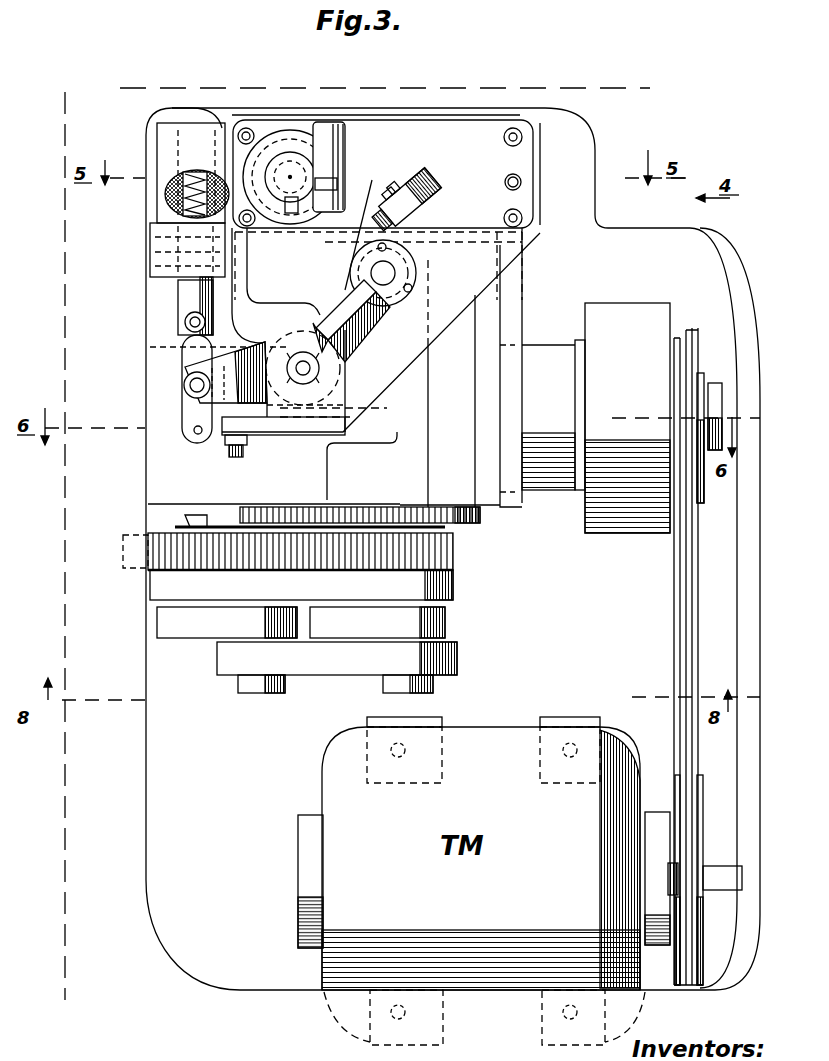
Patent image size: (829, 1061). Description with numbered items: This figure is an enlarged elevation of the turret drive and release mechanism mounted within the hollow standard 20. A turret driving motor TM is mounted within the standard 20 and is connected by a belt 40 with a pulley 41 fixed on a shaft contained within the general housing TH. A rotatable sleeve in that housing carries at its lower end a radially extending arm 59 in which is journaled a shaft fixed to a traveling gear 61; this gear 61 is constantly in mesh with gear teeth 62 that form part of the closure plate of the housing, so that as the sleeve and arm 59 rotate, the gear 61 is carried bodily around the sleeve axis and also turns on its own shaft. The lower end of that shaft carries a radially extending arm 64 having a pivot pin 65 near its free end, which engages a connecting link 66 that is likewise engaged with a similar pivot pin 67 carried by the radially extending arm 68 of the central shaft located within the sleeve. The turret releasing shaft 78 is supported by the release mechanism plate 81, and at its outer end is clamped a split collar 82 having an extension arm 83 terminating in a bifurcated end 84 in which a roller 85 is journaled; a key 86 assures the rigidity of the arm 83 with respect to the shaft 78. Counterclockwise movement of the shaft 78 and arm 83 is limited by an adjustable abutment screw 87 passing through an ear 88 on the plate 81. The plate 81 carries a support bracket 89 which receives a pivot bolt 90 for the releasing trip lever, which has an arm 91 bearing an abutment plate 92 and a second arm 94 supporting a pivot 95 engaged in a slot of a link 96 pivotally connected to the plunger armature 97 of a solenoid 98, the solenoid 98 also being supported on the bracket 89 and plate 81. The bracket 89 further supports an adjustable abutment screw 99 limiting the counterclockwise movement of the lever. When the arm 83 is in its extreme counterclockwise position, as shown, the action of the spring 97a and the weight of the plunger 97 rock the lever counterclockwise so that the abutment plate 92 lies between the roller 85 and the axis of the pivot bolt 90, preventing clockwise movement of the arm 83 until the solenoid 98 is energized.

The hollow standard 20 is at (135, 815).
The belt 40 is at (683, 570).
The pulley 41 is at (693, 332).
The radially extending arm 59 is at (455, 583).
The traveling gear 61 is at (175, 552).
The gear teeth 62 is at (453, 552).
The radially extending arm 64 is at (200, 630).
The pivot pin 65 is at (259, 696).
The connecting link 66 is at (457, 653).
The pivot pin 67 is at (430, 697).
The radially extending arm 68 is at (447, 622).
The turret releasing shaft 78 is at (303, 178).
The release mechanism plate 81 is at (383, 174).
The split collar 82 is at (282, 148).
The extension arm 83 is at (372, 223).
The bifurcated end 84 is at (410, 262).
The roller 85 is at (428, 274).
The key 86 is at (289, 210).
The adjustable abutment screw 87 is at (424, 180).
The ear 88 is at (427, 212).
The support bracket 89 is at (297, 427).
The pivot bolt 90 is at (320, 371).
The arm 91 is at (363, 331).
The abutment plate 92 is at (332, 303).
The second arm 94 is at (205, 362).
The pivot 95 is at (190, 389).
The link 96 is at (193, 352).
The plunger armature 97 is at (187, 292).
The spring 97a is at (168, 172).
The solenoid 98 is at (170, 195).
The adjustable abutment screw 99 is at (238, 458).